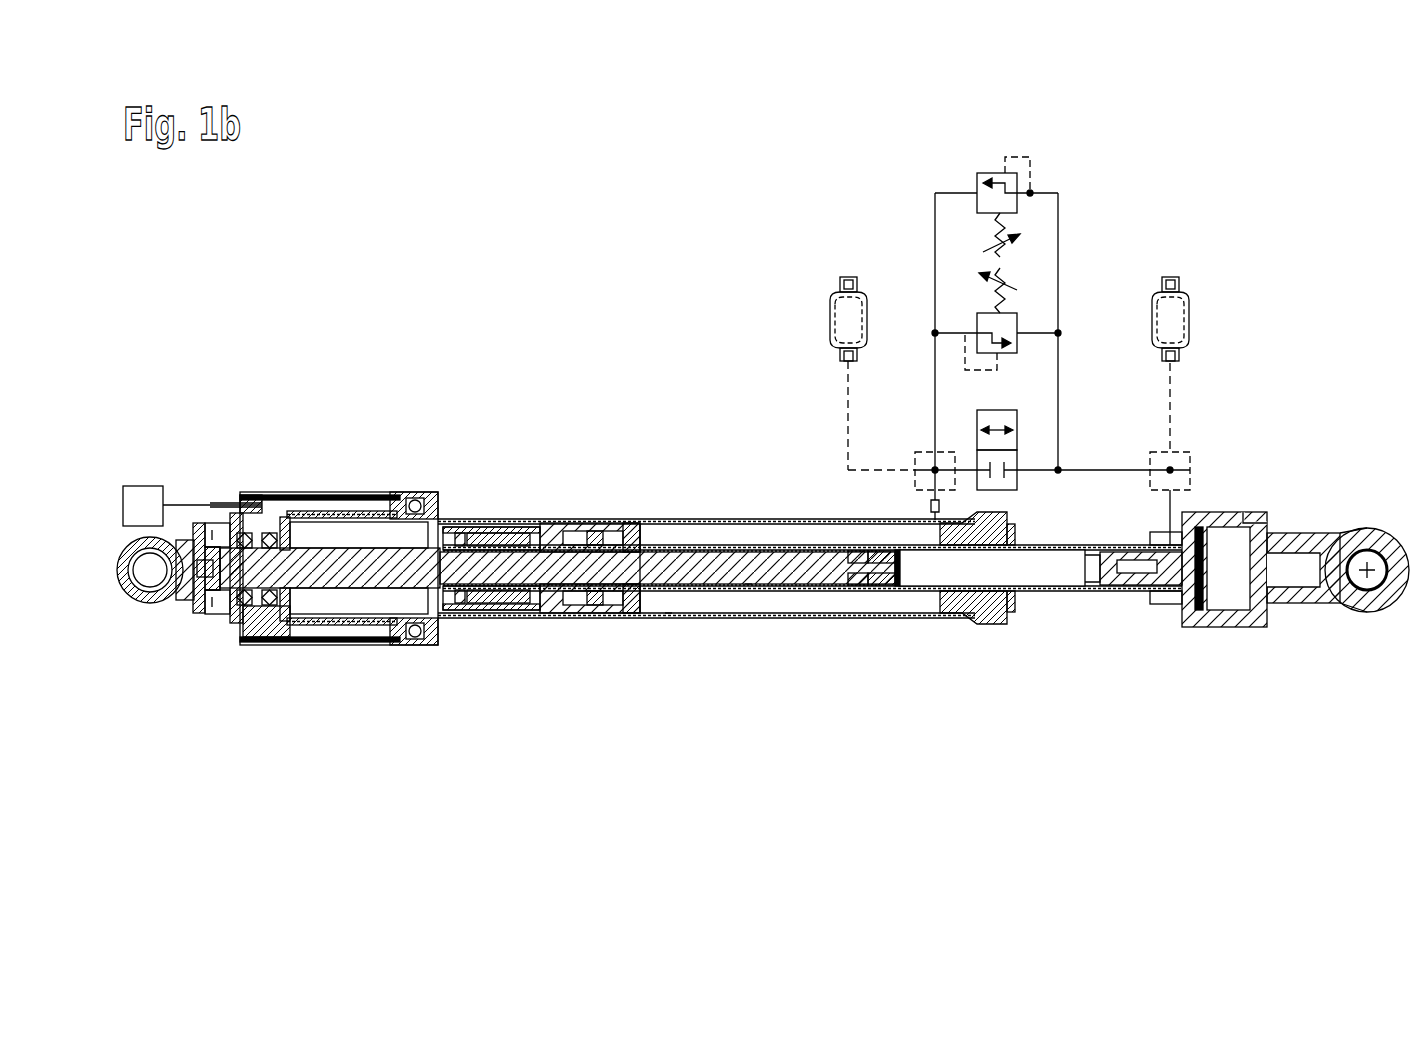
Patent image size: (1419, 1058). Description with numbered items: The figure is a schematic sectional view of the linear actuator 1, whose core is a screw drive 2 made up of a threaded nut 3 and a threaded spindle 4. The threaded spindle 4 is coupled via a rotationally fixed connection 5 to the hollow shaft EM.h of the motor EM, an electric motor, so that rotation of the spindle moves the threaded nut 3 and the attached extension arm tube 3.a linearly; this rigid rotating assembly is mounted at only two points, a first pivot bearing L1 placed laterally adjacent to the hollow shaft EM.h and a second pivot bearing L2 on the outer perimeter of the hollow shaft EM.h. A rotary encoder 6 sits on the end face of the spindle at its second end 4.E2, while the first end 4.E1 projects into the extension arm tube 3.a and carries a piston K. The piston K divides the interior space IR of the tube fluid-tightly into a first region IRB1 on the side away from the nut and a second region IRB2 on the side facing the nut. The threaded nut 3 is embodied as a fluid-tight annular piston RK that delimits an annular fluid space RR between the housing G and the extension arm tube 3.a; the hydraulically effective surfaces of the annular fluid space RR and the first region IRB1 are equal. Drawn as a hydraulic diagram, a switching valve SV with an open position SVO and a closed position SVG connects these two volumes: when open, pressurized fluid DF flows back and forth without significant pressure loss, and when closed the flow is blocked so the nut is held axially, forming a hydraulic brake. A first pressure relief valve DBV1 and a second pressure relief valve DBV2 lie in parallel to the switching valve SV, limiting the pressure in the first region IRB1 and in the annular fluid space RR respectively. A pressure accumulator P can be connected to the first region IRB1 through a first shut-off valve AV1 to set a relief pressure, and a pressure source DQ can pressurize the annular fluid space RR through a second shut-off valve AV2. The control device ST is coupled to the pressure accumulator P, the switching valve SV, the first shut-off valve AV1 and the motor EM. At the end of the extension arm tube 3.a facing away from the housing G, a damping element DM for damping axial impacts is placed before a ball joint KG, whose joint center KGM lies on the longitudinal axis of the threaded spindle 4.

The linear actuator 1 is at (303, 236).
The control device ST is at (140, 505).
The rotary encoder 6 is at (205, 522).
The rotationally fixed connection 5 is at (280, 495).
The motor EM is at (378, 558).
The hollow shaft EM.h is at (355, 642).
The first pivot bearing L1 is at (265, 640).
The second pivot bearing L2 is at (418, 500).
The threaded nut 3 is at (488, 526).
The extension arm tube 3.a is at (655, 545).
The screw drive 2 is at (527, 514).
The housing G is at (734, 519).
The piston K is at (868, 545).
The second end of the threaded spindle 4.E2 is at (208, 615).
The annular piston RK is at (596, 619).
The annular fluid space RR is at (668, 617).
The pressurized fluid DF is at (720, 619).
The threaded spindle 4 is at (748, 588).
The second region IRB2 is at (830, 635).
The first region IRB1 is at (913, 578).
The interior space IR is at (850, 660).
The first end of the threaded spindle 4.E1 is at (1010, 592).
The damping element DM is at (1234, 575).
The ball joint KG is at (1338, 569).
The joint center KGM is at (1370, 580).
The pressure source DQ is at (843, 310).
The pressure accumulator P is at (1180, 310).
The first pressure relief valve DBV1 is at (1017, 203).
The second pressure relief valve DBV2 is at (1017, 333).
The second shut-off valve AV2 is at (920, 450).
The first shut-off valve AV1 is at (1190, 450).
The switching valve SV is at (1059, 443).
The open position SVO is at (1025, 414).
The closed position SVG is at (1025, 486).